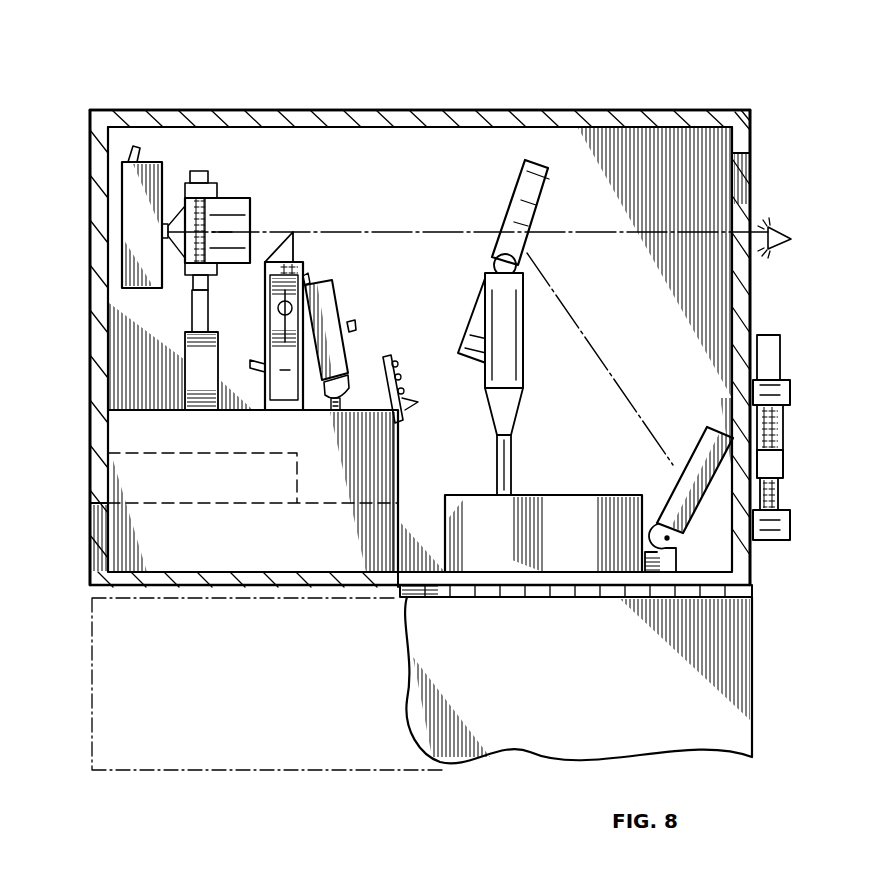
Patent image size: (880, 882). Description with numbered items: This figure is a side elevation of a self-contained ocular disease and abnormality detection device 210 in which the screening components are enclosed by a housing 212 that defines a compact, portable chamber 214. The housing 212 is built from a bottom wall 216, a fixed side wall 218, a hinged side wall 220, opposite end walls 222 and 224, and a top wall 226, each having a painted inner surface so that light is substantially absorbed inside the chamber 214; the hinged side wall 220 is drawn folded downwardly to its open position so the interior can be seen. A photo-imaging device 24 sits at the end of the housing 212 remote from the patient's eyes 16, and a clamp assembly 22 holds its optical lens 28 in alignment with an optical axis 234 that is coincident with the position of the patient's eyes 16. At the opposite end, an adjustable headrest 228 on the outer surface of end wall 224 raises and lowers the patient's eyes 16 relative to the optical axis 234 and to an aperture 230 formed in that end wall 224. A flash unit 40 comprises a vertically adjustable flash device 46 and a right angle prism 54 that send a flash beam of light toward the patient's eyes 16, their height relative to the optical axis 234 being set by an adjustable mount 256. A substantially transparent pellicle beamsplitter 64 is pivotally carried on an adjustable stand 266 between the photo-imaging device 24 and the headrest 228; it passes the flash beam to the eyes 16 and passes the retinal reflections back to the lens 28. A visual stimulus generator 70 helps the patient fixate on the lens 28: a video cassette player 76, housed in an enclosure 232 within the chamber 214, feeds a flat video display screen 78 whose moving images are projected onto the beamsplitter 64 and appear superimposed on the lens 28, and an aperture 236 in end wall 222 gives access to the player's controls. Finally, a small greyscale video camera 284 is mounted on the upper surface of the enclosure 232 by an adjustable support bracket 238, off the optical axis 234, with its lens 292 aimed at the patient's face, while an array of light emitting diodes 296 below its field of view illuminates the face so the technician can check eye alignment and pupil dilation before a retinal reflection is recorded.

The ocular disease and abnormality detection device 210 is at (740, 88).
The housing 212 is at (522, 107).
The chamber 214 is at (456, 214).
The bottom wall 216 is at (592, 583).
The fixed side wall 218 is at (438, 147).
The hinged side wall 220 is at (560, 708).
The end wall 222 is at (93, 367).
The end wall 224 is at (748, 548).
The top wall 226 is at (311, 114).
The adjustable headrest 228 is at (784, 360).
The aperture 230 is at (744, 225).
The enclosure 232 is at (400, 461).
The optical axis 234 is at (440, 230).
The aperture 236 is at (96, 508).
The adjustable support bracket 238 is at (328, 402).
The adjustable mount 256 is at (311, 276).
The adjustable stand 266 is at (529, 432).
The greyscale video camera 284 is at (340, 297).
The lens 292 is at (353, 327).
The array of light emitting diodes 296 is at (405, 401).
The patient's eyes 16 is at (791, 239).
The clamp assembly 22 is at (195, 165).
The photo-imaging device 24 is at (118, 232).
The optical lens 28 is at (228, 203).
The flash unit 40 is at (260, 376).
The flash device 46 is at (266, 292).
The right angle prism 54 is at (278, 258).
The pellicle beamsplitter 64 is at (541, 211).
The visual stimulus generator 70 is at (712, 512).
The video cassette player 76 is at (246, 560).
The flat video display screen 78 is at (670, 490).